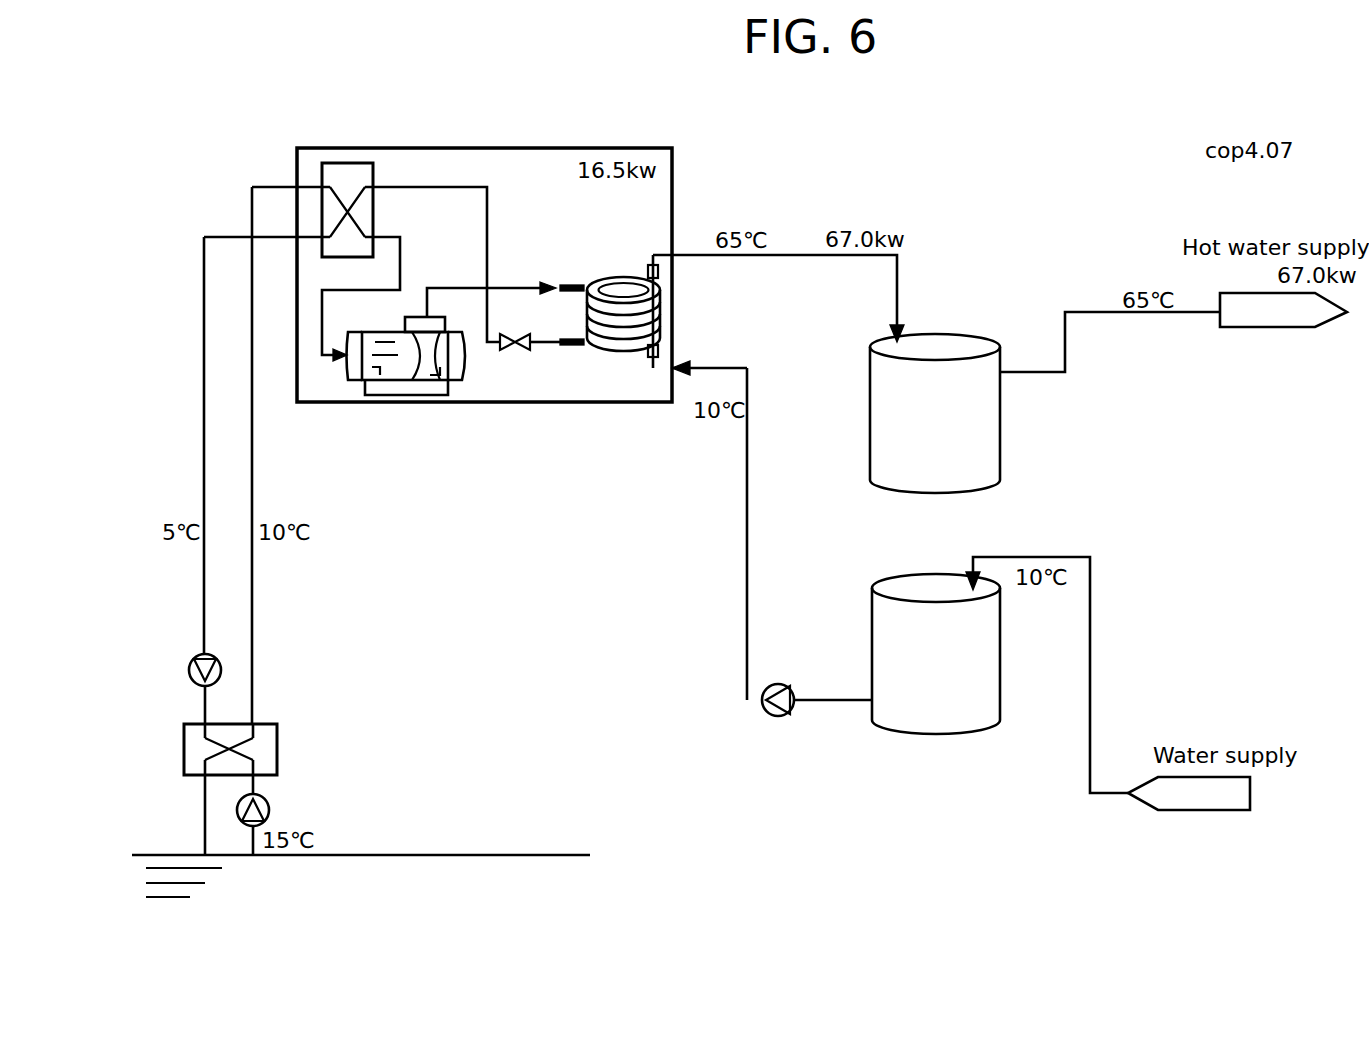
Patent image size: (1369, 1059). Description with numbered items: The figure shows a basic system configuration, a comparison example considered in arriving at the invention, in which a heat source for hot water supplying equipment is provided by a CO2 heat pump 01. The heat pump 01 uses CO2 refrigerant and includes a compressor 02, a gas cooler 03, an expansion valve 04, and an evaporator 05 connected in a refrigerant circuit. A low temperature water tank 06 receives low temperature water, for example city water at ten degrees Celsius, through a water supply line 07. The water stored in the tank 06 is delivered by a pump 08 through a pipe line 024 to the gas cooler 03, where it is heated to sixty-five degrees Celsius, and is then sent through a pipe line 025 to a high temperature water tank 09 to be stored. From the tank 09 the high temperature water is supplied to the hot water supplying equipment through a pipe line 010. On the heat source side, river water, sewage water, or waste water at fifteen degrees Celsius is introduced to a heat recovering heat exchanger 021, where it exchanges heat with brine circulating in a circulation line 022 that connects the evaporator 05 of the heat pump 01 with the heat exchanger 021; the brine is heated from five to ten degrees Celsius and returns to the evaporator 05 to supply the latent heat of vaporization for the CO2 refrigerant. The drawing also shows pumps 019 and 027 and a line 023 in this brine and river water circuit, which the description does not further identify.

The heat pump 01 is at (496, 138).
The compressor 02 is at (468, 363).
The gas cooler 03 is at (620, 285).
The expansion valve 04 is at (514, 338).
The evaporator 05 is at (373, 211).
The low temperature water tank 06 is at (954, 717).
The water supply line 07 is at (1090, 690).
The pump 08 is at (776, 718).
The high temperature water tank 09 is at (952, 350).
The pipe line 010 is at (1080, 312).
The pump 019 is at (270, 812).
The heat recovering heat exchanger 021 is at (277, 748).
The circulation line 022 is at (204, 570).
The pipe 023 is at (205, 808).
The pipe line 024 is at (747, 520).
The pipe line 025 is at (800, 254).
The pump 027 is at (195, 660).